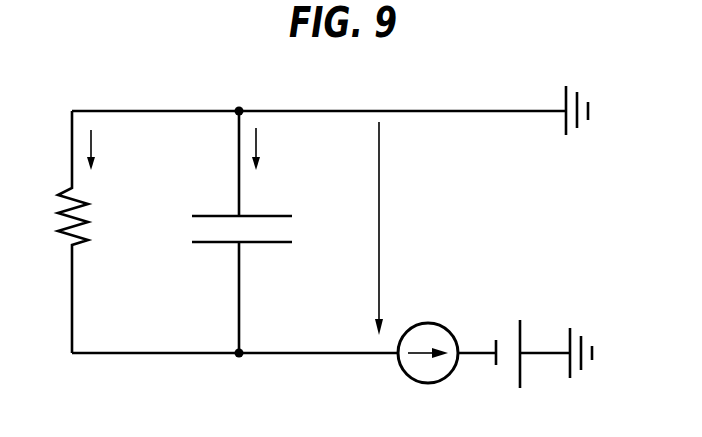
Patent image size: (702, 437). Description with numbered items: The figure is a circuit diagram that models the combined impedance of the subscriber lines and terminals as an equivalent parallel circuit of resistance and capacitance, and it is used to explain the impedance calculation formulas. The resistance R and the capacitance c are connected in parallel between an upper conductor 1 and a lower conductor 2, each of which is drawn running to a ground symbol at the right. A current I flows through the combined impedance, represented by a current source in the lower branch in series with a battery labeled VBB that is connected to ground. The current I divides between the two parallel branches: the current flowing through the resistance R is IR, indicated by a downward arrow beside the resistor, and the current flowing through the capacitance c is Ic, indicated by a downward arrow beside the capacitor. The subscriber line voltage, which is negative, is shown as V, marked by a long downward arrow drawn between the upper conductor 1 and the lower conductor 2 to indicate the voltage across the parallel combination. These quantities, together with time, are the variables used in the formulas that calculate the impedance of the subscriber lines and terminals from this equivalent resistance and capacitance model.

The first node (top conductor) 1 is at (417, 111).
The second node (bottom conductor) 2 is at (335, 354).
The resistance R is at (89, 230).
The capacitance c is at (276, 214).
The current through resistance IR is at (104, 150).
The current through capacitance Ic is at (267, 149).
The subscriber line voltage V is at (389, 228).
The current I is at (428, 340).
The bias voltage source VBB is at (525, 336).